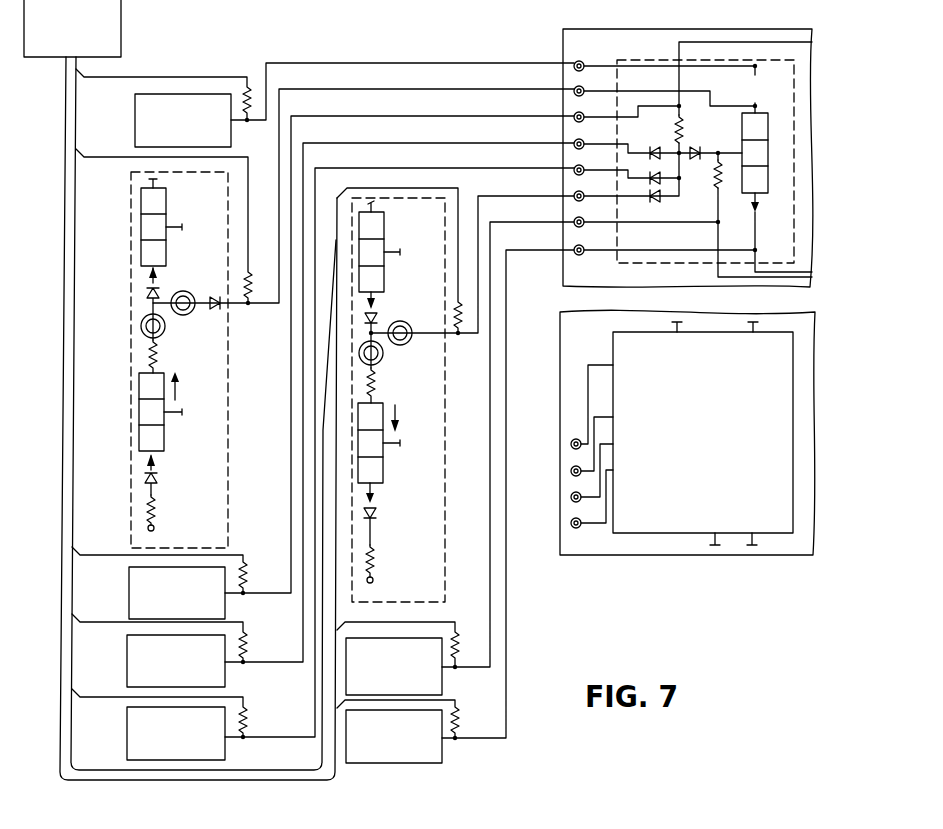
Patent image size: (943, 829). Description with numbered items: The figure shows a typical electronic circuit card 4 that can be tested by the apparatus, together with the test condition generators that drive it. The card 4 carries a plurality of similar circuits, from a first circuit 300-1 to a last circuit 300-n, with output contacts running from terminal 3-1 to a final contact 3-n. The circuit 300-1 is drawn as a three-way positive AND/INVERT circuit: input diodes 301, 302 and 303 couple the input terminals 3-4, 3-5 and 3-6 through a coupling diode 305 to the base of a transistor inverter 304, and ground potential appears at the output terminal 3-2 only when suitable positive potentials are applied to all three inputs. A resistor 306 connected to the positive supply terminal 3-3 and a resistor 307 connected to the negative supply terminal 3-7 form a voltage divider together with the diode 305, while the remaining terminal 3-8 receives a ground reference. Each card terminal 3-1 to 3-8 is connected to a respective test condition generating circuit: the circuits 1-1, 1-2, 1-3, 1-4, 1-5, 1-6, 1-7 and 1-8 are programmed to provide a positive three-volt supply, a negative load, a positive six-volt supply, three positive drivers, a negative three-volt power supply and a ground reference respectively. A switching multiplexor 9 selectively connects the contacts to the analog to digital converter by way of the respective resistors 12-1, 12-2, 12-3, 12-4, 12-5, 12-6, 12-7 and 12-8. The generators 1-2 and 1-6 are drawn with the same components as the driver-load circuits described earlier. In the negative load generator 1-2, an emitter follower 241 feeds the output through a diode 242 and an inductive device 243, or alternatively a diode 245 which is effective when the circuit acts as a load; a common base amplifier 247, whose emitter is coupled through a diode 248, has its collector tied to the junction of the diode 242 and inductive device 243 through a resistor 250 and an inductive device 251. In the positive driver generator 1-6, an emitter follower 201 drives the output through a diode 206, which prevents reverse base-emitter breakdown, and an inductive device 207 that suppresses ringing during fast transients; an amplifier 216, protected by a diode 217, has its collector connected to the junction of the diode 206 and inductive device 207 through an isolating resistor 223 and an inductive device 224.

The switching multiplexor 9 is at (121, 6).
The electronic circuit card 4 is at (607, 29).
The circuit 300-1 is at (630, 64).
The circuit 300-n is at (634, 548).
The positive potential terminal 3-1 is at (583, 62).
The output terminal 3-2 is at (583, 87).
The positive supply terminal 3-3 is at (583, 113).
The input terminal 3-4 is at (583, 140).
The input terminal 3-5 is at (583, 166).
The input terminal 3-6 is at (583, 192).
The negative supply terminal 3-7 is at (583, 218).
The card terminal 3-8 is at (583, 246).
The output contact 3-n is at (577, 531).
The test condition generator 1-1 is at (135, 112).
The test condition generator 1-2 is at (131, 410).
The test condition generator 1-3 is at (129, 592).
The test condition generator 1-4 is at (127, 660).
The test condition generator 1-5 is at (127, 732).
The test condition generator 1-6 is at (445, 468).
The test condition generator 1-7 is at (442, 690).
The test condition generator 1-8 is at (442, 760).
The resistor 12-1 is at (255, 94).
The resistor 12-2 is at (252, 306).
The resistor 12-3 is at (248, 564).
The resistor 12-4 is at (250, 647).
The resistor 12-5 is at (250, 722).
The resistor 12-6 is at (460, 336).
The resistor 12-7 is at (478, 616).
The resistor 12-8 is at (462, 718).
The emitter follower 241 is at (166, 199).
The diode 242 is at (160, 292).
The inductive device 243 is at (190, 295).
The diode 245 is at (215, 318).
The inductive device 251 is at (165, 330).
The resistor 250 is at (159, 357).
The common base amplifier 247 is at (164, 445).
The diode 248 is at (158, 478).
The emitter follower 201 is at (391, 246).
The diode 206 is at (378, 317).
The inductive device 207 is at (408, 324).
The inductive device 224 is at (383, 358).
The isolating resistor 223 is at (377, 388).
The amplifier 216 is at (383, 463).
The diode 217 is at (378, 512).
The input diode 301 is at (655, 147).
The input diode 302 is at (651, 182).
The input diode 303 is at (654, 201).
The transistor inverter 304 is at (758, 198).
The coupling diode 305 is at (695, 148).
The resistor 306 is at (684, 131).
The resistor 307 is at (715, 180).